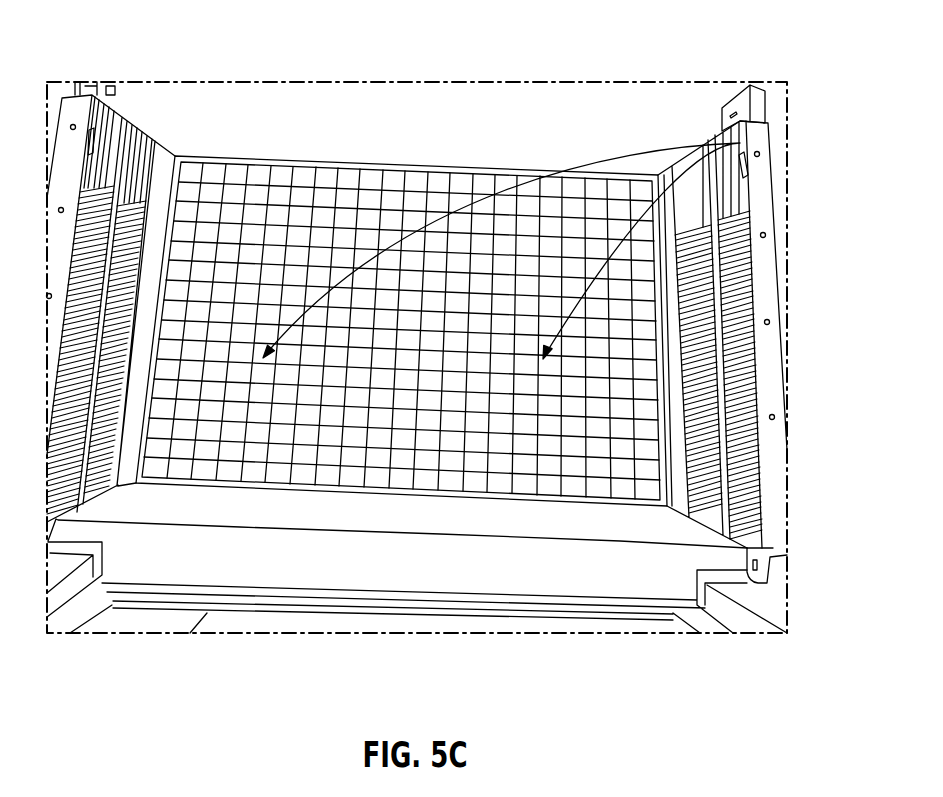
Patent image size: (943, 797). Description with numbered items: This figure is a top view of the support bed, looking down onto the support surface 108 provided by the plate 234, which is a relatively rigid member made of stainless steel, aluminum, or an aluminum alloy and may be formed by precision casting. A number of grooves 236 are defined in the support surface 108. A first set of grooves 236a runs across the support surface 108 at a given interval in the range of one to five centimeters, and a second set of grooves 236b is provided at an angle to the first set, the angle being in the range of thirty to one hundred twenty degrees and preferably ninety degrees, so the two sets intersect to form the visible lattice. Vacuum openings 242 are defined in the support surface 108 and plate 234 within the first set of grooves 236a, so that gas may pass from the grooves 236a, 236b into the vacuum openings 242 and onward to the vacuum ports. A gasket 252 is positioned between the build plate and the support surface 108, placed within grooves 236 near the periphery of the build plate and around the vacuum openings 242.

The support surface 108 is at (260, 173).
The plate 234 is at (353, 163).
The grooves 236 is at (443, 360).
The first set of grooves 236a is at (413, 205).
The second set of grooves 236b is at (255, 472).
The vacuum openings 242 is at (740, 143).
The gasket 252 is at (590, 503).